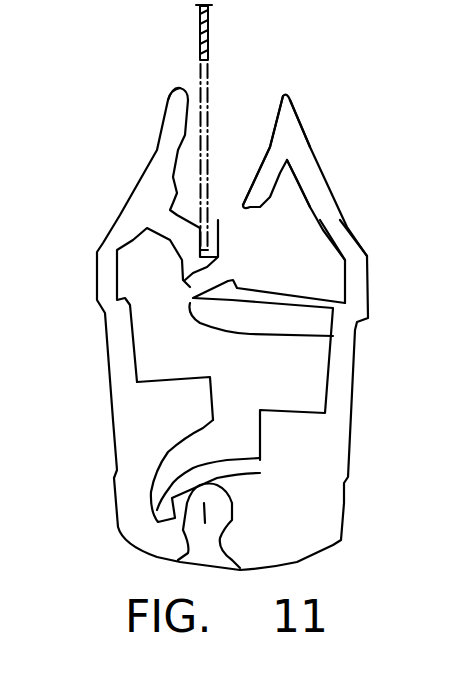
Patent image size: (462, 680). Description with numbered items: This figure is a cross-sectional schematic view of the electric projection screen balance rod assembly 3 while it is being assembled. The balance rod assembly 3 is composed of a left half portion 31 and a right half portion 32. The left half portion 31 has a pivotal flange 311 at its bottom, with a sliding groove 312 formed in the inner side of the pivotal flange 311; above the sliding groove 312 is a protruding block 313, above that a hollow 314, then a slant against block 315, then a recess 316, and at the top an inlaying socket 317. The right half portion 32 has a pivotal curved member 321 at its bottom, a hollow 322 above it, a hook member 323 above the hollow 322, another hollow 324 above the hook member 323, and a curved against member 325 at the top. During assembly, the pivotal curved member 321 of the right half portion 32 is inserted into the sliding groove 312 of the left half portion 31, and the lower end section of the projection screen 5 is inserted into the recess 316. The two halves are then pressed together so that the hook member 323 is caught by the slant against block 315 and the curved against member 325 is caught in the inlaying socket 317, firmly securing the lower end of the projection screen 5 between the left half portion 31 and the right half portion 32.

The projection screen balance rod assembly 3 is at (313, 123).
The projection screen 5 is at (211, 36).
The left half portion 31 is at (170, 210).
The right half portion 32 is at (324, 200).
The pivotal flange 311 is at (180, 561).
The sliding groove 312 is at (178, 464).
The protruding block 313 is at (178, 395).
The hollow 314 is at (152, 345).
The slant against block 315 is at (190, 269).
The recess 316 is at (133, 240).
The inlaying socket 317 is at (170, 184).
The pivotal curved member 321 is at (345, 463).
The hollow 322 is at (291, 366).
The hook member 323 is at (345, 335).
The another hollow 324 is at (311, 251).
The curved against member 325 is at (308, 158).